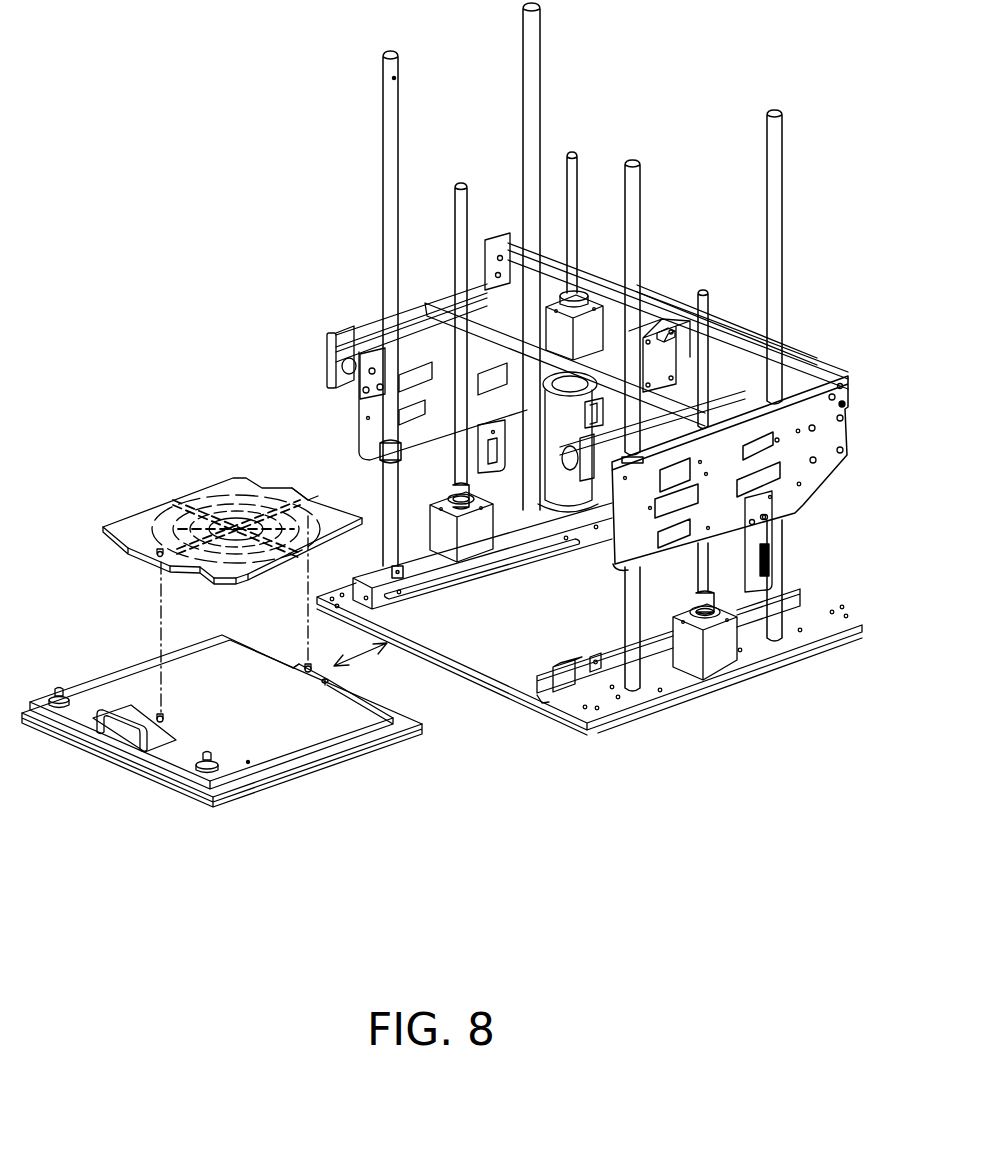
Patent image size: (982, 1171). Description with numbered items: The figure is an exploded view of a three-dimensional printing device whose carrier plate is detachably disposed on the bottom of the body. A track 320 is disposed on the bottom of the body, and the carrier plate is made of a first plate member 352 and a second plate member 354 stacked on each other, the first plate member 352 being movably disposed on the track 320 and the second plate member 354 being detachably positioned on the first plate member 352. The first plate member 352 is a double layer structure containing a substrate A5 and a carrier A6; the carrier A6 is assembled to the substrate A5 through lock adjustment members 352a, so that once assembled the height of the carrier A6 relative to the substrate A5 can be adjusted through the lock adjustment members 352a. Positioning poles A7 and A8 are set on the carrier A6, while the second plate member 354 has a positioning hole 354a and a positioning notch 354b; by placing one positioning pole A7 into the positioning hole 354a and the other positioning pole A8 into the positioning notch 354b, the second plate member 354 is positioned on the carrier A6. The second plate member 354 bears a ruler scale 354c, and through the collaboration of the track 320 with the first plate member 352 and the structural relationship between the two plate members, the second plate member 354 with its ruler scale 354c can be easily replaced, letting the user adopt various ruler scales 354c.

The track 320 is at (570, 672).
The first plate member 352 is at (373, 860).
The lock adjustment members 352a is at (58, 706).
The second plate member 354 is at (127, 517).
The positioning hole 354a is at (158, 552).
The positioning notch 354b is at (321, 497).
The ruler scale 354c is at (229, 482).
The substrate A5 is at (165, 722).
The carrier A6 is at (248, 764).
The positioning pole A7 is at (296, 692).
The positioning post A8 is at (326, 686).